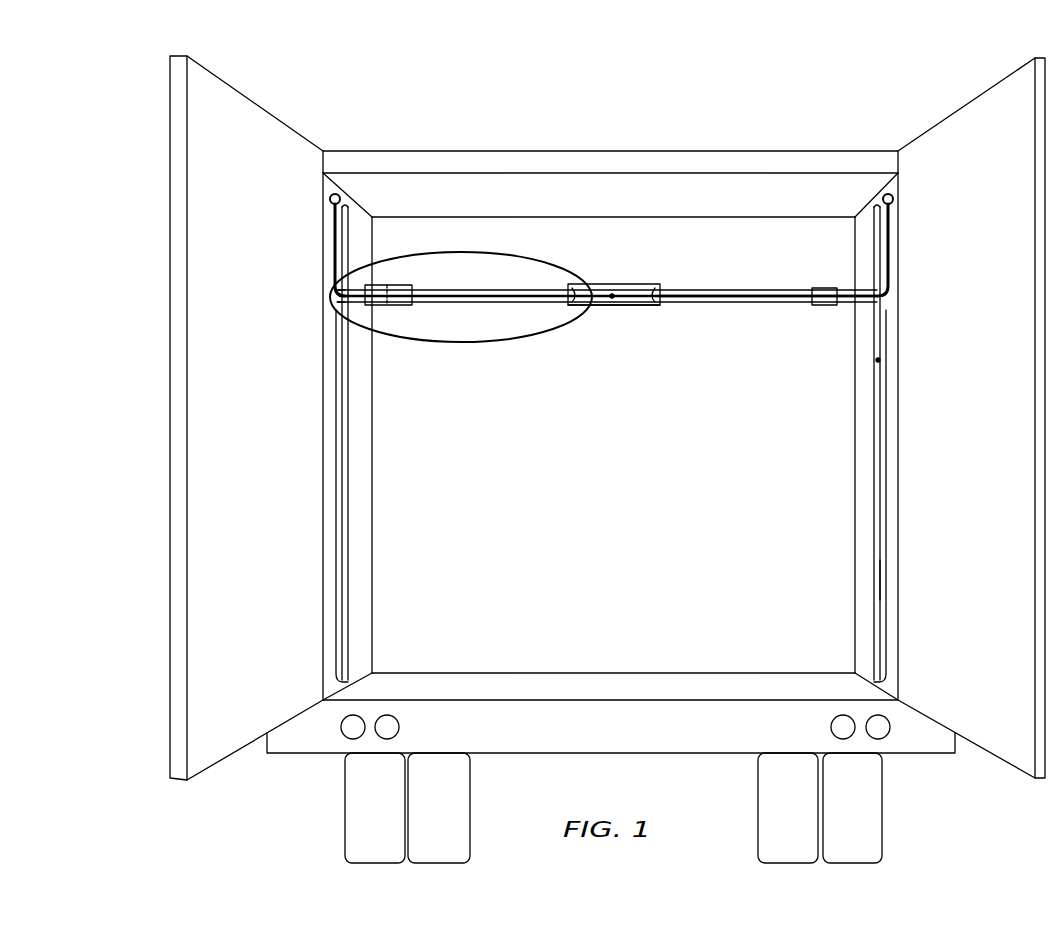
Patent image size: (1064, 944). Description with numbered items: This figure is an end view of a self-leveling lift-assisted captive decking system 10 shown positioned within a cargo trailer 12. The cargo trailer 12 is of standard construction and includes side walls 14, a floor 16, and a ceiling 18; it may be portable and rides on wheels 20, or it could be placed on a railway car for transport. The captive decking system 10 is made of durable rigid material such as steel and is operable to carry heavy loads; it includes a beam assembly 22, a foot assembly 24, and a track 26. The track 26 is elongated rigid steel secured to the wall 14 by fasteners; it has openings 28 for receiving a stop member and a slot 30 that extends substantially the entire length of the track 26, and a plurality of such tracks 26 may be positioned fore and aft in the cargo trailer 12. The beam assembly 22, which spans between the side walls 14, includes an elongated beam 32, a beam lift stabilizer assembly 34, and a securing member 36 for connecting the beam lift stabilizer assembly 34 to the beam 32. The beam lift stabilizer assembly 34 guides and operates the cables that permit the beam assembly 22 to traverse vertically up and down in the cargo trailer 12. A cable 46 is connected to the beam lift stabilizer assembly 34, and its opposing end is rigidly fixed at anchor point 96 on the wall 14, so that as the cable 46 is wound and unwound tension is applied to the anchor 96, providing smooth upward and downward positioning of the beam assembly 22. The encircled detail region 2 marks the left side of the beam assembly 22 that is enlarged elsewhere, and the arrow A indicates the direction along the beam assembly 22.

The captive decking system 10 is at (135, 142).
The cargo trailer 12 is at (663, 160).
The side walls 14 is at (360, 507).
The floor 16 is at (596, 688).
The ceiling 18 is at (720, 192).
The wheels 20 is at (870, 808).
The beam assembly 22 is at (605, 282).
The foot assembly 24 is at (335, 296).
The track 26 is at (338, 466).
The openings 28 is at (878, 360).
The slot 30 is at (876, 570).
The beam 32 is at (630, 285).
The beam lift stabilizer assembly 34 is at (628, 306).
The securing member 36 is at (612, 298).
The cable 46 is at (490, 307).
The anchor point 96 is at (896, 199).
The detail region 2 is at (462, 252).
The direction arrow A is at (845, 276).